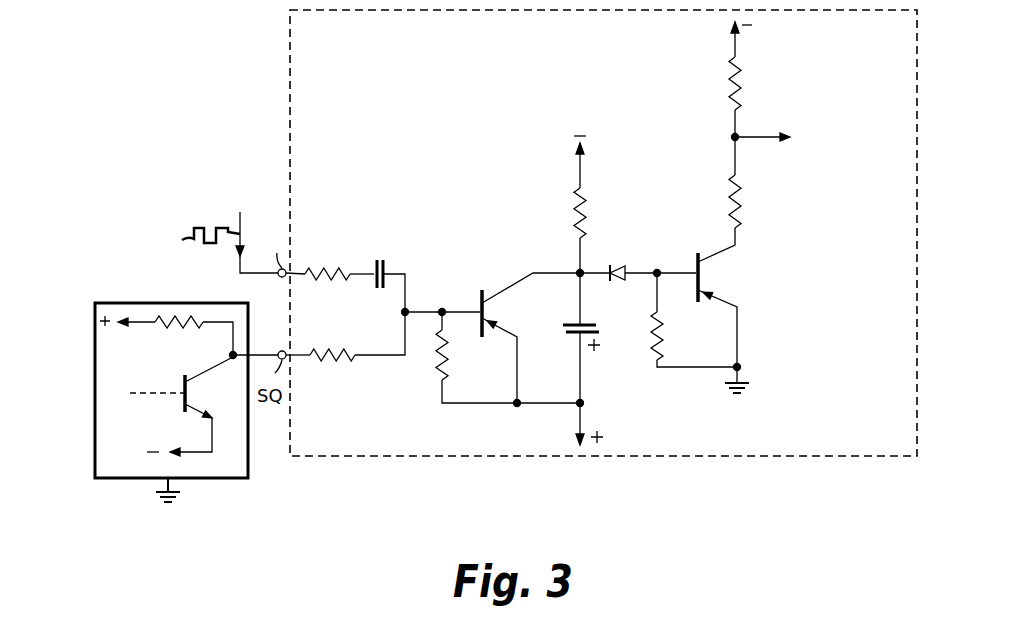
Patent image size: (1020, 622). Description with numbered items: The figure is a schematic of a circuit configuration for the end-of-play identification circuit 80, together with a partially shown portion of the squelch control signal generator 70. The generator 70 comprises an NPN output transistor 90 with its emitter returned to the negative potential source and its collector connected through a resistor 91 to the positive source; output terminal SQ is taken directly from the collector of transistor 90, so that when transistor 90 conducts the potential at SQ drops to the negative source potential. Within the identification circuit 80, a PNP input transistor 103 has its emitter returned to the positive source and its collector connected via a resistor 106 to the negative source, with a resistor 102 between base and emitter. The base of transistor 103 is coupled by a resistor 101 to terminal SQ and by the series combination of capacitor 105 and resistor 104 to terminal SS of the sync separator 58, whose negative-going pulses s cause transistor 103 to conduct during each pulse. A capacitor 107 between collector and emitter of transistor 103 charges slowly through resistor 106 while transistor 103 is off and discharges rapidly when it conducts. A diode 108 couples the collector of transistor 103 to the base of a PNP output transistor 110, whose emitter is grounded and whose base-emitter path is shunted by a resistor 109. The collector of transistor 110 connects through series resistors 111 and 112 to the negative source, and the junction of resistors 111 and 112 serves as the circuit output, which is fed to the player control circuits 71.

The sync separator 58 is at (227, 201).
The squelch control signal generator 70 is at (248, 468).
The player control circuits output 71 is at (820, 157).
The end-of-play identification circuit 80 is at (675, 457).
The output transistor 90 is at (183, 405).
The resistor 91 is at (166, 330).
The resistor 101 is at (325, 360).
The resistor 102 is at (451, 356).
The input transistor 103 is at (480, 299).
The resistor 104 is at (325, 265).
The capacitor 105 is at (381, 259).
The resistor 106 is at (588, 211).
The capacitor 107 is at (568, 323).
The diode 108 is at (613, 265).
The resistor 109 is at (652, 343).
The output transistor 110 is at (695, 258).
The resistor 111 is at (725, 200).
The resistor 112 is at (722, 88).